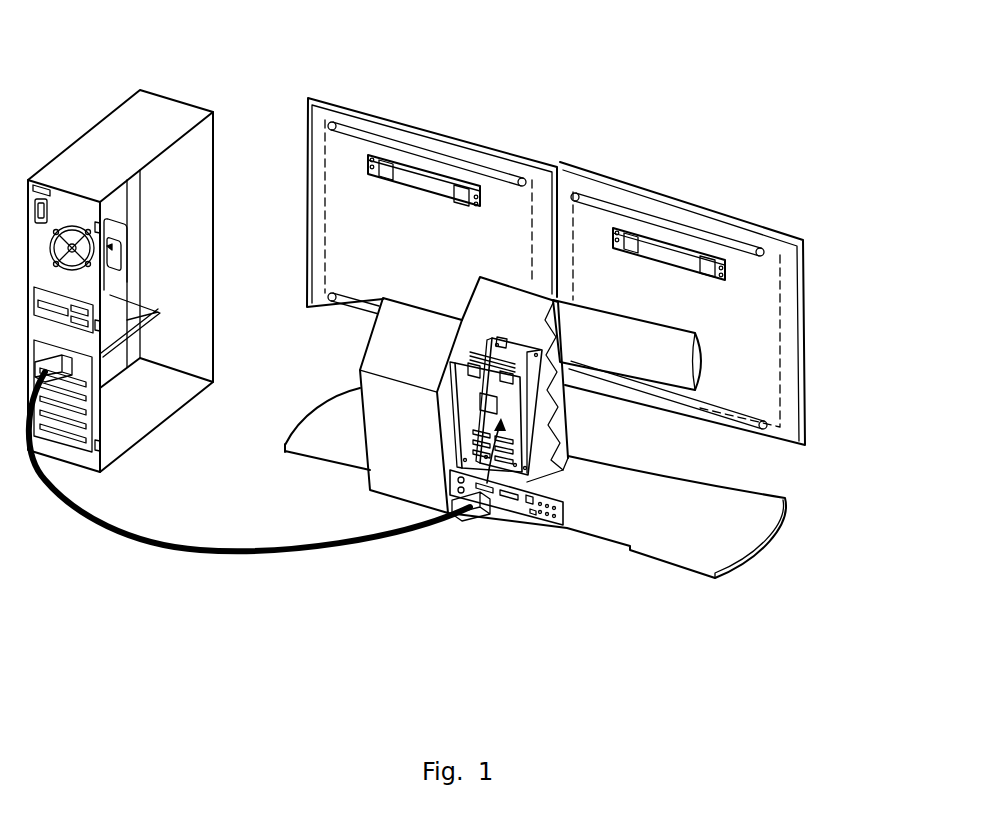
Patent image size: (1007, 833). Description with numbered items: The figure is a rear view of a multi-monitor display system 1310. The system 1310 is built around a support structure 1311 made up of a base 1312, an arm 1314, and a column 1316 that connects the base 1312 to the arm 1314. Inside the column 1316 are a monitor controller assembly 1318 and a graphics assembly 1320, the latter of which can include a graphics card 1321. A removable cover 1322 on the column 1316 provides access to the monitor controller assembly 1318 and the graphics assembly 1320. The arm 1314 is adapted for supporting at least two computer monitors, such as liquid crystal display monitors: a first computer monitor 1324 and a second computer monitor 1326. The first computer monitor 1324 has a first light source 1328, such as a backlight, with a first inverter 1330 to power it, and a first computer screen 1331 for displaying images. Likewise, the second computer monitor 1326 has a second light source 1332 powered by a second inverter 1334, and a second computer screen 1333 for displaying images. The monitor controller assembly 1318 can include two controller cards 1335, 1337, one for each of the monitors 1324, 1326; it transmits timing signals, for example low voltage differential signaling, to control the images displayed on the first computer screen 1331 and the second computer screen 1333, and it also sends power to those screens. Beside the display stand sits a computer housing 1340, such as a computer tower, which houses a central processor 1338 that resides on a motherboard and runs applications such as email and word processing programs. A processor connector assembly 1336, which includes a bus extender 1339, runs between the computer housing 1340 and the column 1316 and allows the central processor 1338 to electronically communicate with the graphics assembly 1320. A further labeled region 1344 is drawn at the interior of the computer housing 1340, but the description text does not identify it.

The multi-monitor display system 1310 is at (633, 72).
The support structure 1311 is at (573, 630).
The base 1312 is at (690, 521).
The arm 1314 is at (652, 358).
The column 1316 is at (562, 434).
The monitor controller assembly 1318 is at (490, 505).
The graphics assembly 1320 is at (513, 340).
The graphics card 1321 is at (563, 298).
The removable cover 1322 is at (425, 456).
The first computer monitor 1324 is at (806, 285).
The second computer monitor 1326 is at (306, 108).
The first light source 1328 is at (702, 233).
The first inverter 1330 is at (657, 247).
The first computer screen 1331 is at (750, 287).
The second light source 1332 is at (500, 177).
The second computer screen 1333 is at (343, 148).
The second inverter 1334 is at (434, 183).
The controller card 1335 is at (482, 386).
The processor connector assembly 1336 is at (199, 553).
The controller card 1337 is at (483, 353).
The central processor 1338 is at (110, 254).
The bus extender 1339 is at (127, 320).
The computer housing 1340 is at (140, 112).
The tower interior 1344 is at (110, 370).